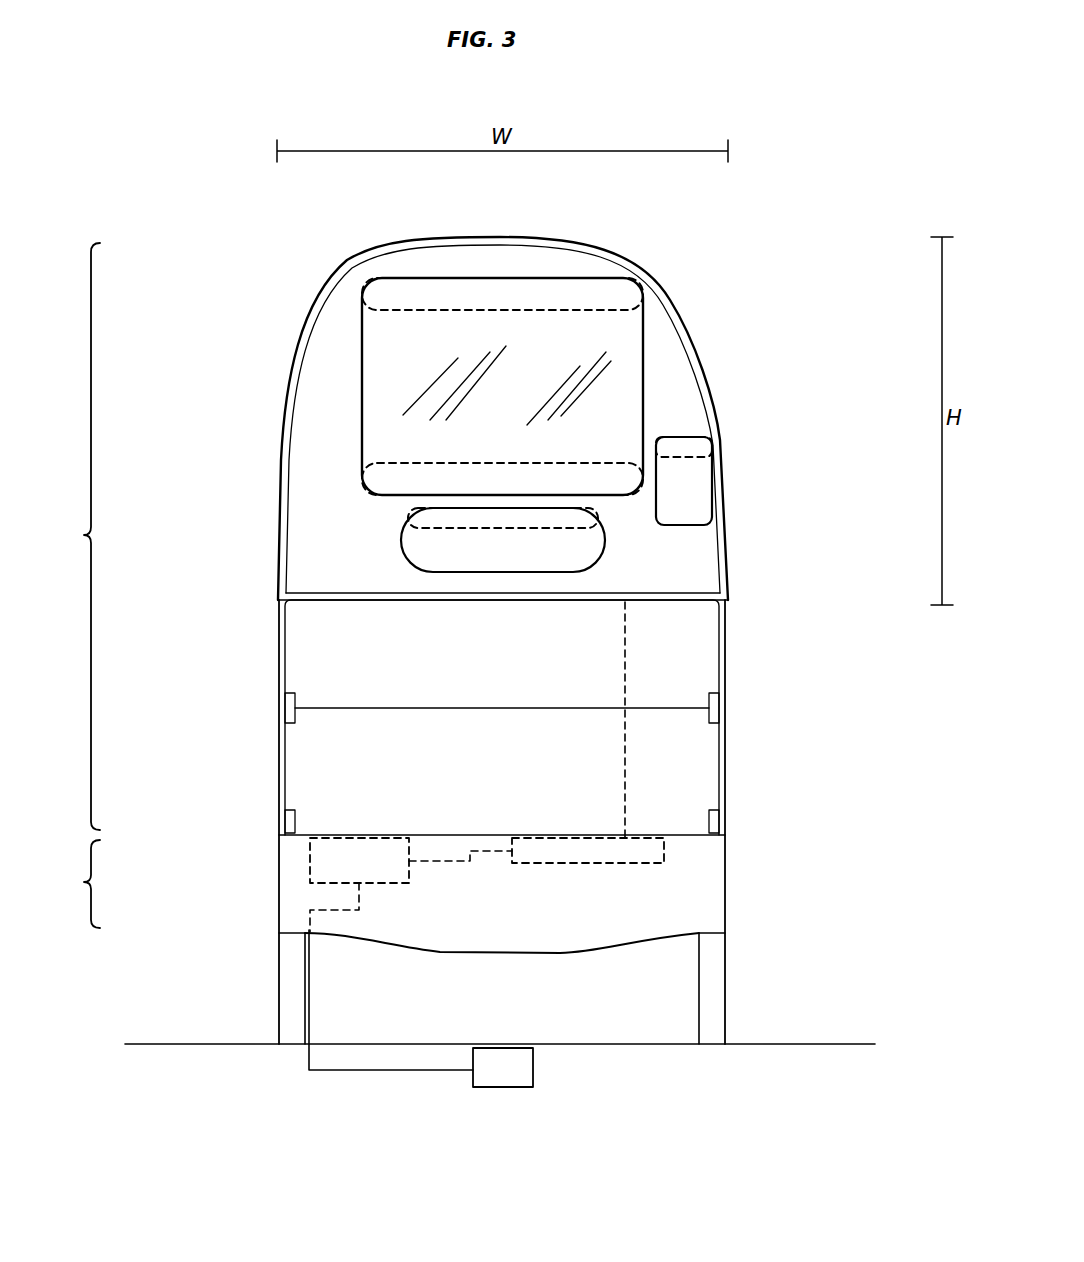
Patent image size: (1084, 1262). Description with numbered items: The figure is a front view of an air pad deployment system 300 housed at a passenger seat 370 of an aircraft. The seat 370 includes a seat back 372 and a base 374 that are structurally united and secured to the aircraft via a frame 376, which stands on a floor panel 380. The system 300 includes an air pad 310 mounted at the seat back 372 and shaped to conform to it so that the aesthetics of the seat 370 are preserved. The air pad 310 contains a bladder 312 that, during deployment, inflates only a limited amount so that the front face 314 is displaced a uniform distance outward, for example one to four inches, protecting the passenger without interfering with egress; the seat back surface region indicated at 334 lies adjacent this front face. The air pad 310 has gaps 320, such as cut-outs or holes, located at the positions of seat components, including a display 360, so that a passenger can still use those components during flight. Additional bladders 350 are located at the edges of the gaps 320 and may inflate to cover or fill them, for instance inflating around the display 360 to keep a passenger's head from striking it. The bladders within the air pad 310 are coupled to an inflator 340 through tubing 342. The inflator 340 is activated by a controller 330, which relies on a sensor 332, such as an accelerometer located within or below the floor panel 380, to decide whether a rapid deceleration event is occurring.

The air pad deployment system 300 is at (497, 661).
The air pad 310 is at (528, 430).
The bladder 312 is at (312, 424).
The front face 314 is at (300, 534).
The gaps 320 is at (620, 411).
The controller 330 is at (383, 883).
The sensor 332 is at (533, 1075).
The seat back surface 334 is at (310, 571).
The inflator 340 is at (616, 863).
The tubing 342 is at (625, 745).
The additional bladders 350 is at (647, 286).
The display 360 is at (606, 329).
The seat 370 is at (283, 740).
The seat back 372 is at (71, 536).
The base 374 is at (71, 884).
The frame 376 is at (712, 952).
The floor panel 380 is at (622, 1043).